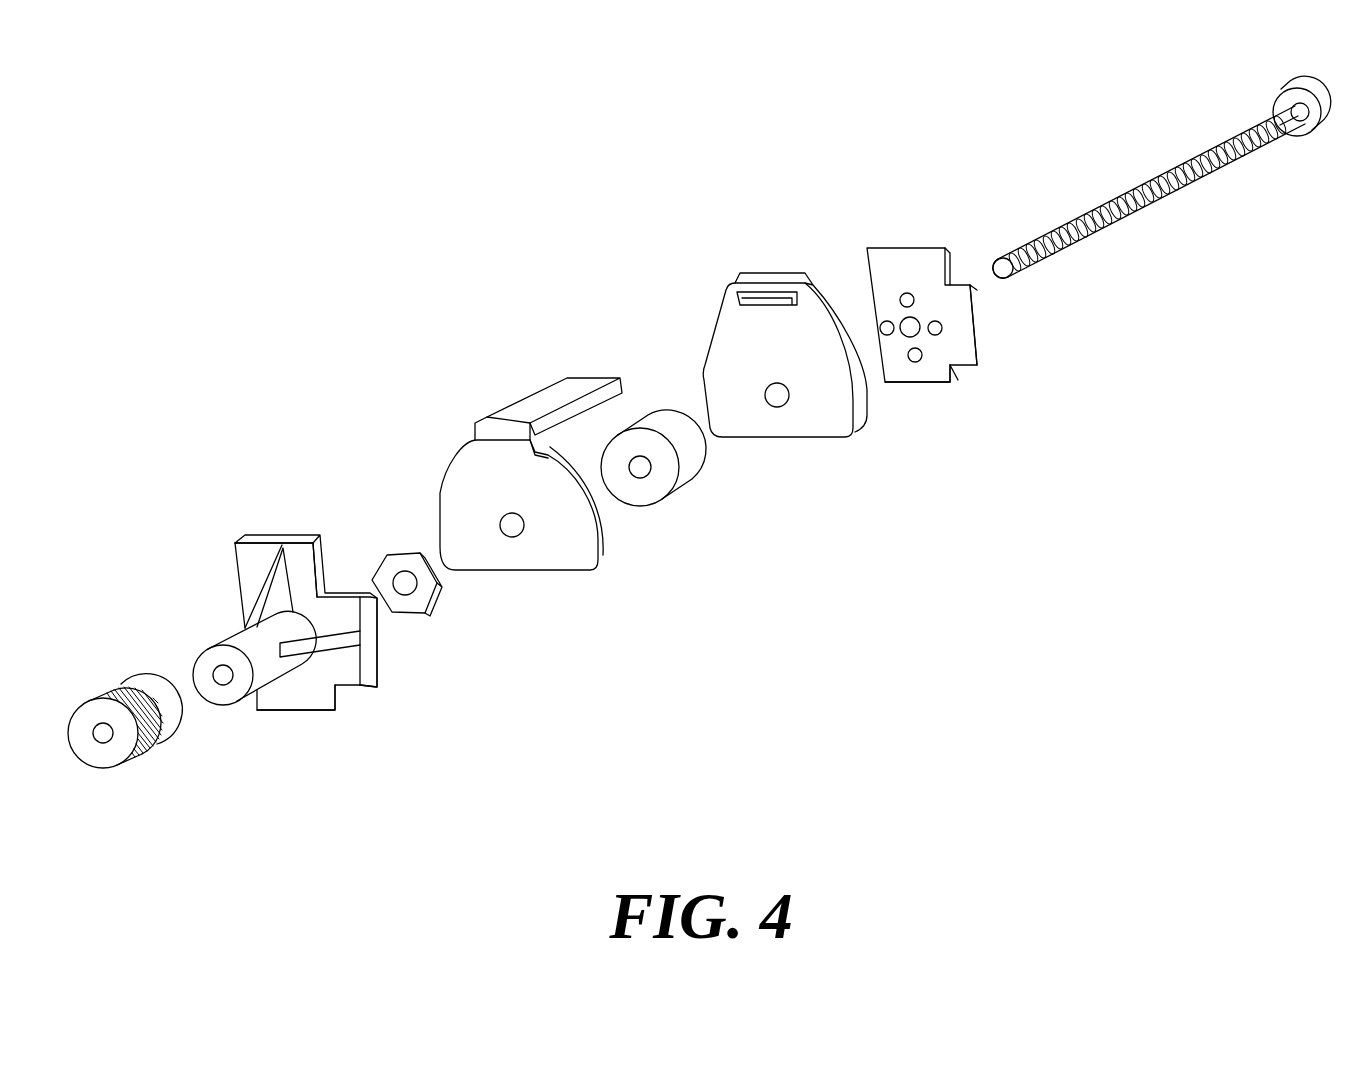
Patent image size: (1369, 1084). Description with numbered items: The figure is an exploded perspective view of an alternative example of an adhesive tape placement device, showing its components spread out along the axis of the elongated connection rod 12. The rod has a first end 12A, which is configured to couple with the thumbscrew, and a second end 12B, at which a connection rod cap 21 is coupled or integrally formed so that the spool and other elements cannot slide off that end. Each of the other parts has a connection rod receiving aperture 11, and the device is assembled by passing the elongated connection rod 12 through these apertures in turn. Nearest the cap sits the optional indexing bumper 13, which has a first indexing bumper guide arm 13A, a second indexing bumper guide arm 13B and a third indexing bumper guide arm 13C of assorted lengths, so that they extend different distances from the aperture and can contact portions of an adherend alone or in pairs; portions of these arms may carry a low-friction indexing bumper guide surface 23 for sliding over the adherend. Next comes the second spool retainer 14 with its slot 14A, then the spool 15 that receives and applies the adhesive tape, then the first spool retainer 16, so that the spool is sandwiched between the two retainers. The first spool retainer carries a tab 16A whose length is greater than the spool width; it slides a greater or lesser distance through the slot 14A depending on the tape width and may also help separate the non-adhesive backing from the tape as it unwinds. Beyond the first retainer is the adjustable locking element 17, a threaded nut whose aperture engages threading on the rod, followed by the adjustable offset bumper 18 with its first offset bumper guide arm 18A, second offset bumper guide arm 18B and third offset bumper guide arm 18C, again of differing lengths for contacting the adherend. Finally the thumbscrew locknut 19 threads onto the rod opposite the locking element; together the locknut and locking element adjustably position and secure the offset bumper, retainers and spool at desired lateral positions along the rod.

The connection rod receiving aperture 11 is at (103, 735).
The elongated connection rod 12 is at (1157, 202).
The first end 12A is at (1013, 280).
The second end 12B is at (1310, 133).
The connection rod cap 21 is at (1312, 137).
The indexing bumper 13 is at (850, 233).
The first indexing bumper guide arm 13A is at (912, 322).
The second indexing bumper guide arm 13B is at (972, 305).
The third indexing bumper guide arm 13C is at (930, 385).
The indexing bumper guide surface 23 is at (898, 257).
The second spool retainer 14 is at (708, 290).
The slot 14A is at (773, 287).
The spool 15 is at (650, 398).
The first spool retainer 16 is at (482, 403).
The tab 16A is at (548, 397).
The adjustable locking element 17 is at (385, 540).
The adjustable offset bumper 18 is at (213, 600).
The first offset bumper guide arm 18A is at (270, 540).
The second offset bumper guide arm 18B is at (373, 687).
The third offset bumper guide arm 18C is at (307, 712).
The thumbscrew locknut 19 is at (103, 668).